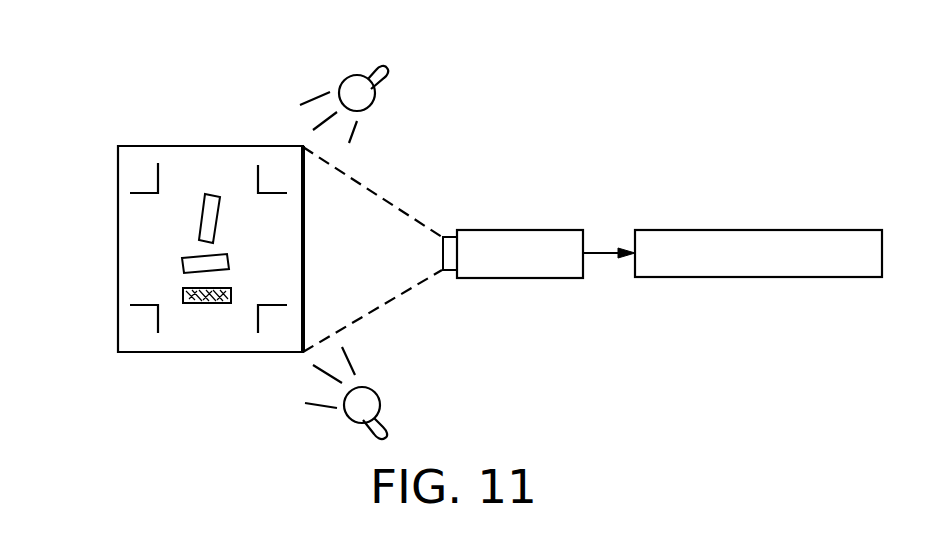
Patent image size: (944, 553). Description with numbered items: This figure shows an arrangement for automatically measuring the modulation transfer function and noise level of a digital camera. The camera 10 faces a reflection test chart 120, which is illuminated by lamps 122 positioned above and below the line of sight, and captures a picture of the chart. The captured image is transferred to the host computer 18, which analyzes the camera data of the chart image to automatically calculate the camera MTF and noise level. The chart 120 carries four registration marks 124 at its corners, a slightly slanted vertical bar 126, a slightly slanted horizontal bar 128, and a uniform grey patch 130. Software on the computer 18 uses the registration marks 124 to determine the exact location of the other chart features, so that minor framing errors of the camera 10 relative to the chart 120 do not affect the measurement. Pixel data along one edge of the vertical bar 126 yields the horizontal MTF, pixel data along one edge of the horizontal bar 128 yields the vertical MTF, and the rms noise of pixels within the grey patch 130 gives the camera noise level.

The camera 10 is at (523, 230).
The host computer 18 is at (763, 230).
The reflection test chart 120 is at (294, 262).
The lamps 122 is at (352, 84).
The registration marks 124 is at (156, 182).
The slightly slanted vertical bar 126 is at (201, 217).
The slightly slanted horizontal bar 128 is at (181, 261).
The uniform grey patch 130 is at (207, 305).